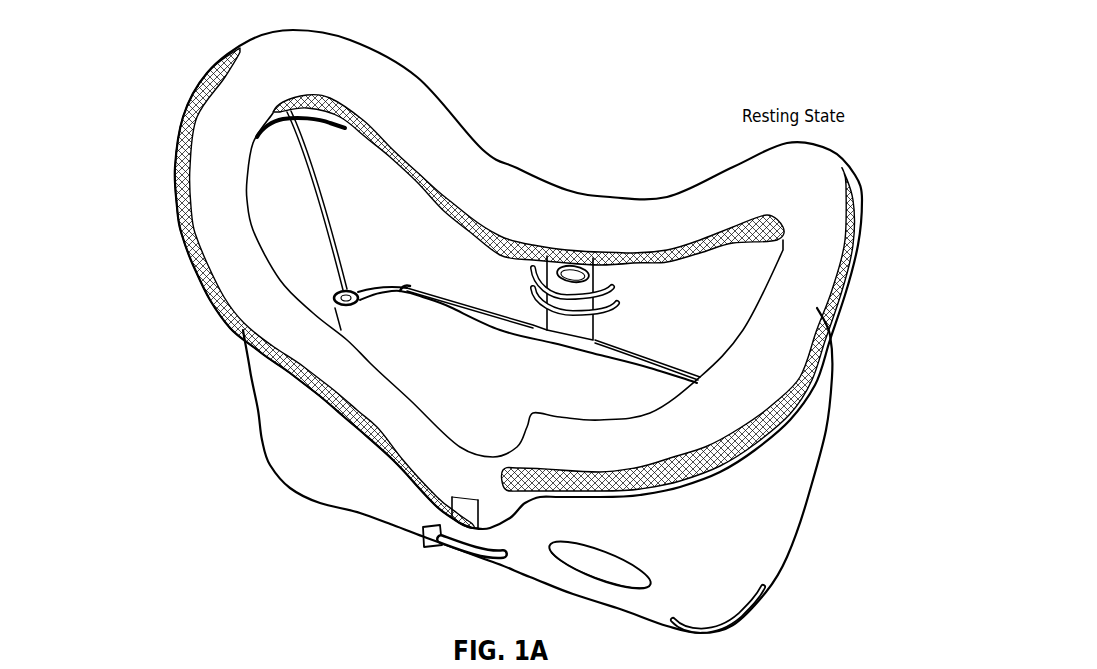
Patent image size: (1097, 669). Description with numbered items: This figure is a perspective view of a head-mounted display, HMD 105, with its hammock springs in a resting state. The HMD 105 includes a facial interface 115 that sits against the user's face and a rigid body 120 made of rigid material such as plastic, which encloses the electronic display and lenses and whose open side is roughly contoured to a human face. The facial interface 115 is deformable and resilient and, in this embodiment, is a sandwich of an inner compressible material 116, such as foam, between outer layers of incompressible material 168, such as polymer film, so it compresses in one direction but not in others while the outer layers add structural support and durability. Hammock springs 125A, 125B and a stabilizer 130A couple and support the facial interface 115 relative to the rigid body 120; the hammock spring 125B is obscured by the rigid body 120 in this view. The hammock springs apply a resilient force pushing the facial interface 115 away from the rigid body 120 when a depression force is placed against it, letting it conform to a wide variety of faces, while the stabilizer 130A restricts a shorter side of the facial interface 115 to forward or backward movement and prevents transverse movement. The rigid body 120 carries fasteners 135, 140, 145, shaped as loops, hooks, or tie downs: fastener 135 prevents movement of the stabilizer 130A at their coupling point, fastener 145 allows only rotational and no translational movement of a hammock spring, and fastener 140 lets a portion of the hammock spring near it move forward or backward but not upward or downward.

The HMD 105 is at (896, 73).
The facial interface 115 is at (181, 97).
The incompressible material outer layer 168 is at (187, 247).
The compressible material 116 is at (197, 263).
The rigid body 120 is at (293, 490).
The stabilizer 130A is at (333, 205).
The fastener 135 is at (360, 302).
The fastener 140 is at (620, 288).
The fastener 145 is at (410, 283).
The hammock spring 125A is at (597, 345).
The hammock spring 125B is at (450, 500).